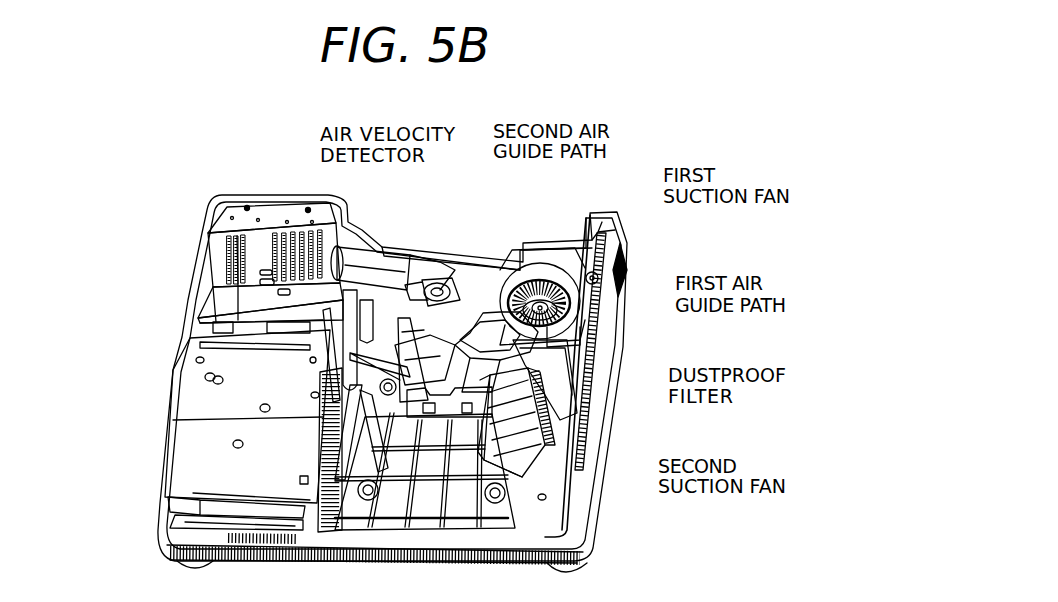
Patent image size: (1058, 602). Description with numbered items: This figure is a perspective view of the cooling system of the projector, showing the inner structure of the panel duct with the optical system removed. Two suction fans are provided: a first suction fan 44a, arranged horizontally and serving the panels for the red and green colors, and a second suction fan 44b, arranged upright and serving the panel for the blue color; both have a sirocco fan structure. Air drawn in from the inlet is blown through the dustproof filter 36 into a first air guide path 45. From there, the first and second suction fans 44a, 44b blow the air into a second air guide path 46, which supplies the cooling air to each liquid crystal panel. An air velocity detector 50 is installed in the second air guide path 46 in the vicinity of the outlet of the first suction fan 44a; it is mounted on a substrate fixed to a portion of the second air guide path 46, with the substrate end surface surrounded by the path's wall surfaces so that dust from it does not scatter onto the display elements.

The air velocity detector 50 is at (428, 285).
The second air guide path 46 is at (458, 343).
The first suction fan 44a is at (563, 275).
The first air guide path 45 is at (548, 372).
The dustproof filter 36 is at (590, 395).
The second suction fan 44b is at (513, 420).